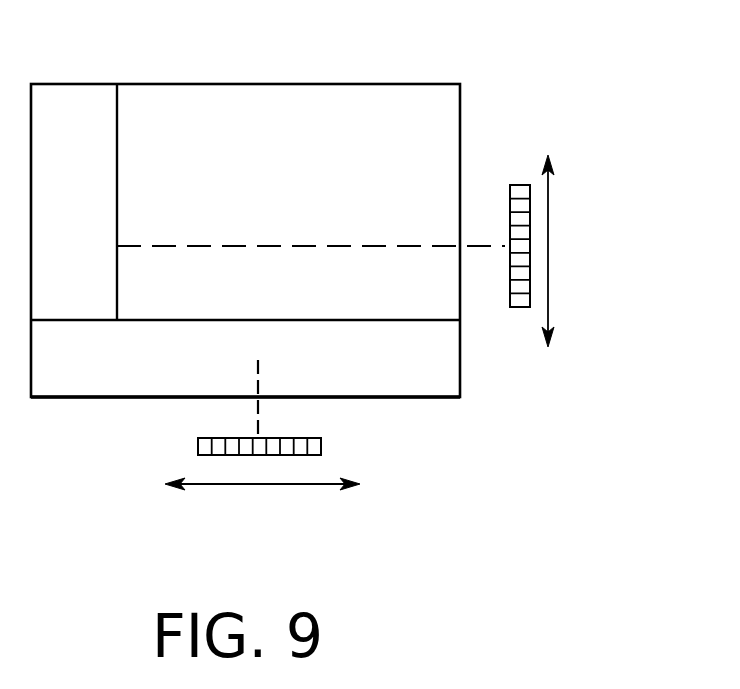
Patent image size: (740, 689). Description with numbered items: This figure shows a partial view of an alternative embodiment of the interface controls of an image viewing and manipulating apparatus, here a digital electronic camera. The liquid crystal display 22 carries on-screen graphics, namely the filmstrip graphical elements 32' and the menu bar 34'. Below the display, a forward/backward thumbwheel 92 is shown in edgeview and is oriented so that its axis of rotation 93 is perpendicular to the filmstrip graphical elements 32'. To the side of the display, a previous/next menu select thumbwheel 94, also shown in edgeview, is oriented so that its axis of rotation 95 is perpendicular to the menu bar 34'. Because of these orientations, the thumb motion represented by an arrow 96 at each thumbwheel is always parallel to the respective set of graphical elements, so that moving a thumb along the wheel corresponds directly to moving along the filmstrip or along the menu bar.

The liquid crystal display 22 is at (247, 84).
The menu bar 34' is at (171, 202).
The filmstrip graphical elements 32' is at (245, 297).
The axis of rotation 95 is at (467, 247).
The axis of rotation 93 is at (258, 413).
The forward/backward thumbwheel 92 is at (290, 438).
The previous/next menu select thumbwheel 94 is at (510, 207).
The arrow 96 is at (548, 268).